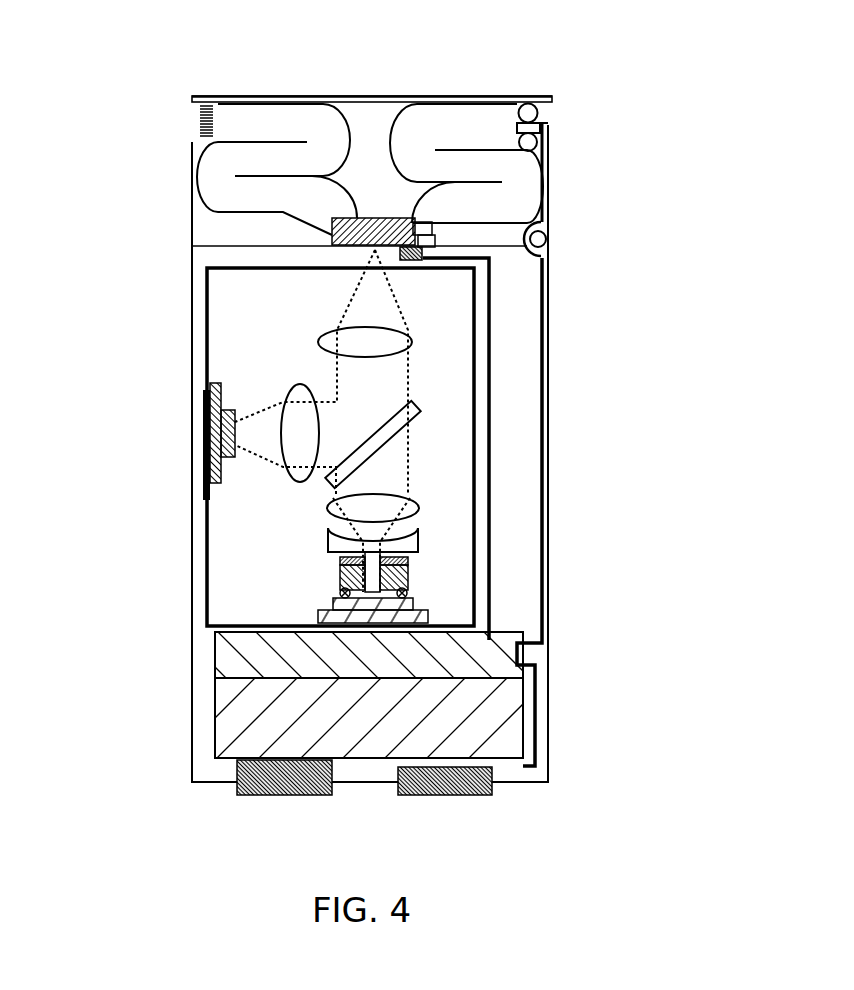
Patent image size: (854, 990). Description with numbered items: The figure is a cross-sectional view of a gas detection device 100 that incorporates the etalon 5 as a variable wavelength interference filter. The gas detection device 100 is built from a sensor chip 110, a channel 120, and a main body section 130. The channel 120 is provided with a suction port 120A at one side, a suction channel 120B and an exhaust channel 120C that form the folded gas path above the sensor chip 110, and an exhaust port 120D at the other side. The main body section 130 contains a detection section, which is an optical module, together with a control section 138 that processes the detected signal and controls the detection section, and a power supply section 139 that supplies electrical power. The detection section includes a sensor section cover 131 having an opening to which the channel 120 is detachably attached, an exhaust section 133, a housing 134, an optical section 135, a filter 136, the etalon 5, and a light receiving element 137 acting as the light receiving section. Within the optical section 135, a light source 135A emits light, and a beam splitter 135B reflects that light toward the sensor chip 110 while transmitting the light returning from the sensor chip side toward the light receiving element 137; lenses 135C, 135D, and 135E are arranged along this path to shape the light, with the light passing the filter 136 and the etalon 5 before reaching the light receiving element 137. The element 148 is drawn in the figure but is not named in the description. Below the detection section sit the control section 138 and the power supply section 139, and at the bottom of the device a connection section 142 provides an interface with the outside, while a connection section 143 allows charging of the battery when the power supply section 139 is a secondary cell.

The gas detection device 100 is at (370, 423).
The sensor chip 110 is at (367, 218).
The channel 120 is at (370, 130).
The suction port 120A is at (187, 108).
The suction channel 120B is at (268, 118).
The exhaust channel 120C is at (478, 125).
The exhaust port 120D is at (593, 157).
The sensor section cover 131 is at (432, 97).
The exhaust section 133 is at (542, 115).
The main body section 130 is at (555, 265).
The light receiving element 148 is at (420, 260).
The optical section 135 is at (380, 421).
The light source 135A is at (205, 433).
The beam splitter 135B is at (422, 415).
The lens 135C is at (295, 478).
The lens 135D is at (413, 342).
The lens 135E is at (422, 492).
The filter 136 is at (410, 565).
The etalon 5 is at (405, 593).
The light receiving element 137 is at (428, 615).
The control section 138 is at (215, 647).
The power supply section 139 is at (215, 713).
The connection section 142 is at (285, 797).
The connection section 143 is at (450, 797).
The housing 134 is at (548, 717).